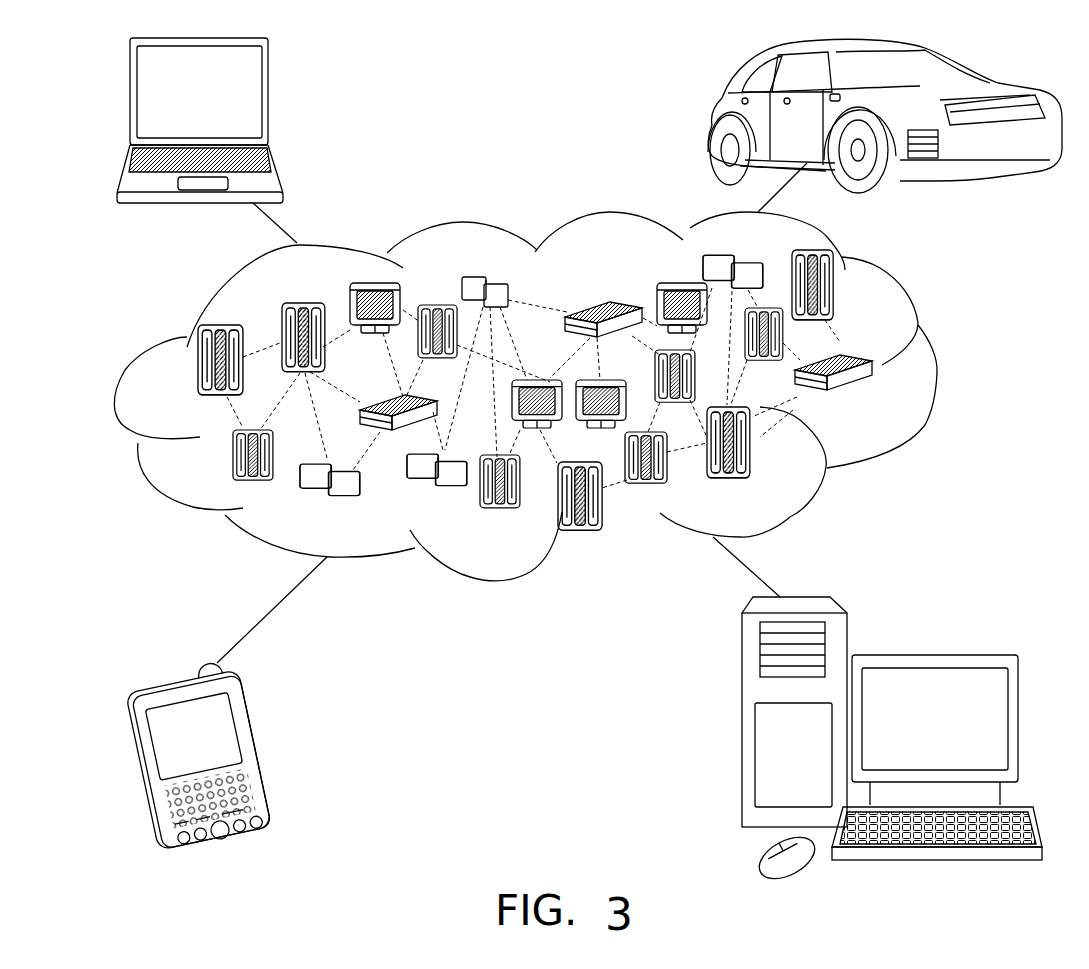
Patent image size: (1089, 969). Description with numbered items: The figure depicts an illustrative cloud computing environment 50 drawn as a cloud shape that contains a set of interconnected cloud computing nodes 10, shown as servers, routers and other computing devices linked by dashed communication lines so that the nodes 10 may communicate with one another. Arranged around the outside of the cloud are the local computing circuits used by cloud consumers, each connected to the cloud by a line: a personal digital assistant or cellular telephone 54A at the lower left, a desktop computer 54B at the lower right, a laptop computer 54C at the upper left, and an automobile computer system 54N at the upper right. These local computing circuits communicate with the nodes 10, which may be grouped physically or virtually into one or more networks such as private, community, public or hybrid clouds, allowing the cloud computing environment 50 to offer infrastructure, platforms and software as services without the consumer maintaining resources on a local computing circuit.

The cloud computing nodes 10 is at (884, 404).
The cloud computing environment 50 is at (937, 371).
The personal digital assistant or cellular telephone 54A is at (262, 753).
The desktop computer 54B is at (932, 652).
The laptop computer 54C is at (272, 100).
The automobile computer system 54N is at (712, 117).